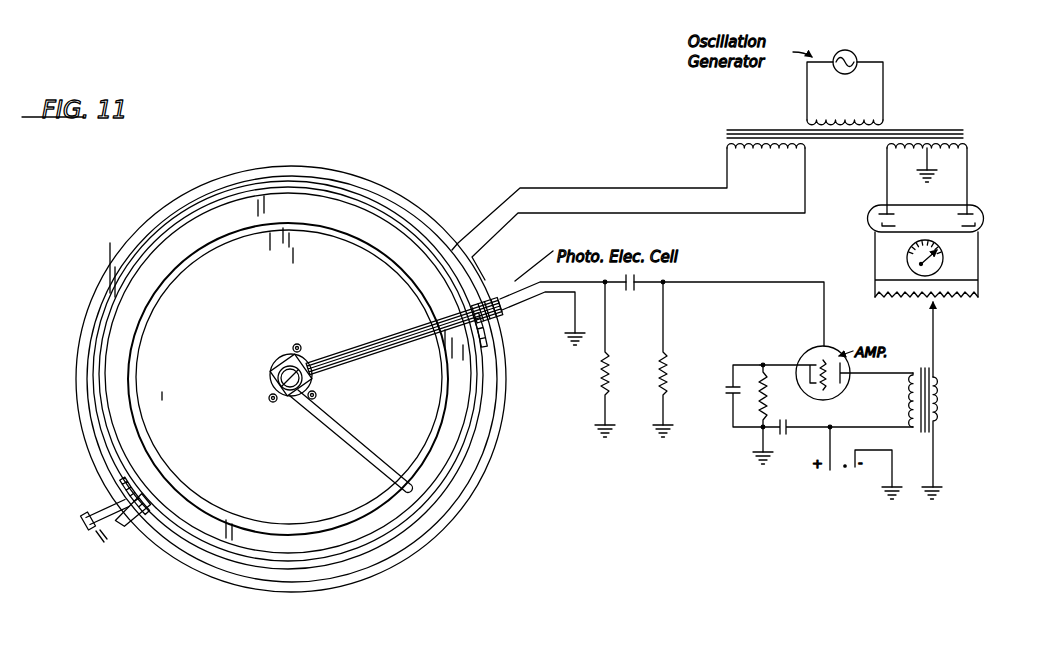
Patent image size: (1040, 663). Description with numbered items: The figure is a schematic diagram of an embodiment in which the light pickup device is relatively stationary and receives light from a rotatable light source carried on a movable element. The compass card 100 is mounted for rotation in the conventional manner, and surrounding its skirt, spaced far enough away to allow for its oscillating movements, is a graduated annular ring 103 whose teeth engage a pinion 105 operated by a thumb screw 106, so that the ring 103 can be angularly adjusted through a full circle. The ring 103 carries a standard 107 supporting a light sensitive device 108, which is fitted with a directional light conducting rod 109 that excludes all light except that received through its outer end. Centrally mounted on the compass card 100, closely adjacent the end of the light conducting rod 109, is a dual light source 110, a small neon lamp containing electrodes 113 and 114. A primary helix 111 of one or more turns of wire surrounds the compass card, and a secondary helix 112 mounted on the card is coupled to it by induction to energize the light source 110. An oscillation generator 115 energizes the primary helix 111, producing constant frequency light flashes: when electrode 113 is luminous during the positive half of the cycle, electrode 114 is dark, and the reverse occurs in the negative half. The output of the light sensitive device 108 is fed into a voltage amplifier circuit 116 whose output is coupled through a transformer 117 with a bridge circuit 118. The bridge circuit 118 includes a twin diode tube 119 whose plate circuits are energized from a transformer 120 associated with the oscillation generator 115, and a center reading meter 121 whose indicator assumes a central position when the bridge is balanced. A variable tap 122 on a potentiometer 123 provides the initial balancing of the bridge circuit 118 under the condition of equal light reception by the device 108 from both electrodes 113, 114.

The compass card 100 is at (350, 547).
The graduated annular ring 103 is at (402, 537).
The pinion 105 is at (143, 520).
The thumb screw 106 is at (105, 545).
The standard 107 is at (450, 286).
The light sensitive device 108 is at (493, 280).
The light conducting rod 109 is at (333, 352).
The dual light source 110 is at (290, 357).
The primary helix 111 is at (478, 490).
The secondary helix 112 is at (280, 528).
The electrode 113 is at (271, 396).
The electrode 114 is at (321, 388).
The oscillation generator 115 is at (874, 58).
The voltage amplifier circuit 116 is at (766, 363).
The transformer 117 is at (941, 400).
The bridge circuit 118 is at (954, 271).
The twin diode tube 119 is at (986, 210).
The transformer 120 is at (953, 132).
The center reading meter 121 is at (940, 260).
The variable tap 122 is at (940, 305).
The potentiometer 123 is at (970, 296).